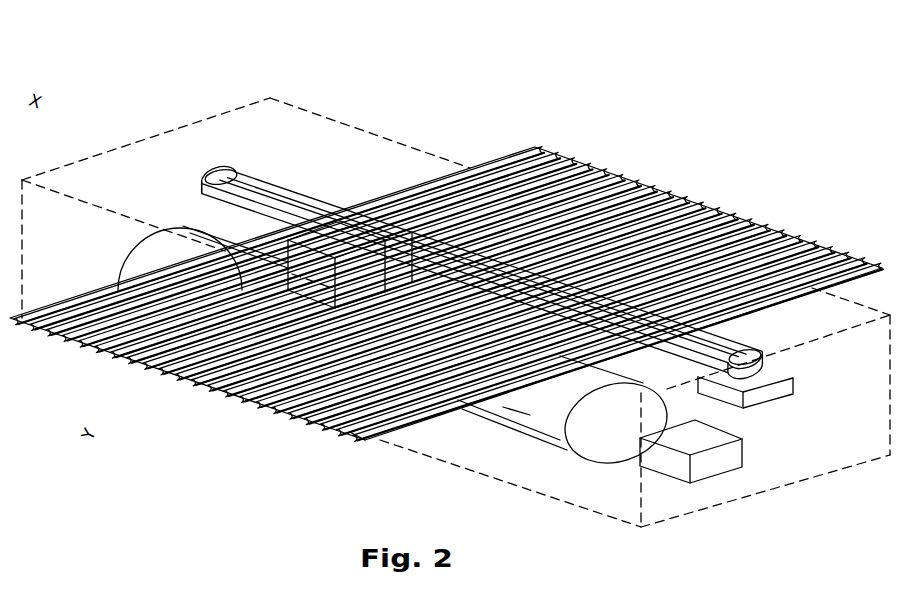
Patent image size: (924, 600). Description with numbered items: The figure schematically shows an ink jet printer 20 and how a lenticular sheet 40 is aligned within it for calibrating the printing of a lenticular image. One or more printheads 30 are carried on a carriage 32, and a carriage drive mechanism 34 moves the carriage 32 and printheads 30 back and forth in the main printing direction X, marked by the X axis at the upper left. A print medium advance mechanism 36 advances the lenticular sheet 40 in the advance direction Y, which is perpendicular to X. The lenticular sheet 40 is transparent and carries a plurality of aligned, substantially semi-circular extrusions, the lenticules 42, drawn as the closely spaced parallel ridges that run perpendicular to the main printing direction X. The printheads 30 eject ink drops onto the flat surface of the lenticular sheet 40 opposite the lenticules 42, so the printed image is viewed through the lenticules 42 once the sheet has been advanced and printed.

The ink jet printer 20 is at (256, 79).
The printheads 30 is at (203, 268).
The carriage 32 is at (340, 232).
The carriage drive mechanism 34 is at (795, 374).
The print medium advance mechanism 36 is at (745, 441).
The lenticular sheet 40 is at (735, 213).
The lenticules 42 is at (335, 433).